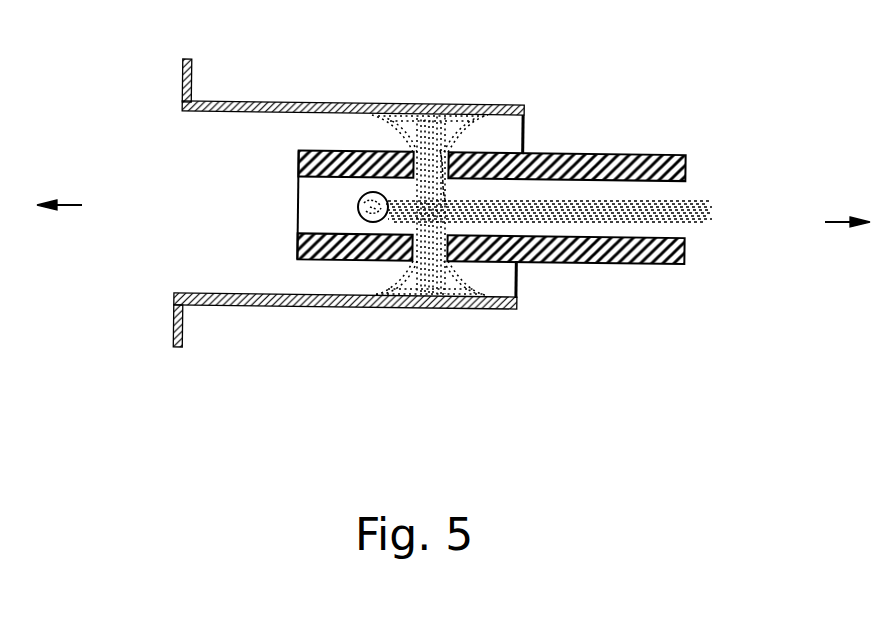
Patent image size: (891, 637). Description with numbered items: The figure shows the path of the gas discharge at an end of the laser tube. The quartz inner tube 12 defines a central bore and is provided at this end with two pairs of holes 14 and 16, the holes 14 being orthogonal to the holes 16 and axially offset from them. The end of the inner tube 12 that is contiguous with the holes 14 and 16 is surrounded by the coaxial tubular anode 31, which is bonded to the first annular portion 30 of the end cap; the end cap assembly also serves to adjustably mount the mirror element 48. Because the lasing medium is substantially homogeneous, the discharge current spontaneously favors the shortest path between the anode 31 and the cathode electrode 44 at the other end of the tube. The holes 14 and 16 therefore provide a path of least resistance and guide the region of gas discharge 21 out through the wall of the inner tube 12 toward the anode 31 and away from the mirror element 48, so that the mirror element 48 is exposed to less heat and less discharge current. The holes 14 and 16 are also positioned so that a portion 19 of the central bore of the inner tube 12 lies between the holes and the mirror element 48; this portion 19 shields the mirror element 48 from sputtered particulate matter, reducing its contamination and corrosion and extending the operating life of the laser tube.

The inner tube 12 is at (350, 140).
The holes 14 is at (358, 220).
The holes 16 is at (443, 150).
The portion of the central bore 19 is at (305, 217).
The region of gas discharge 21 is at (440, 298).
The first annular portion 30 is at (195, 80).
The anode 31 is at (497, 312).
The cathode electrode 44 is at (828, 224).
The mirror element 48 is at (83, 207).